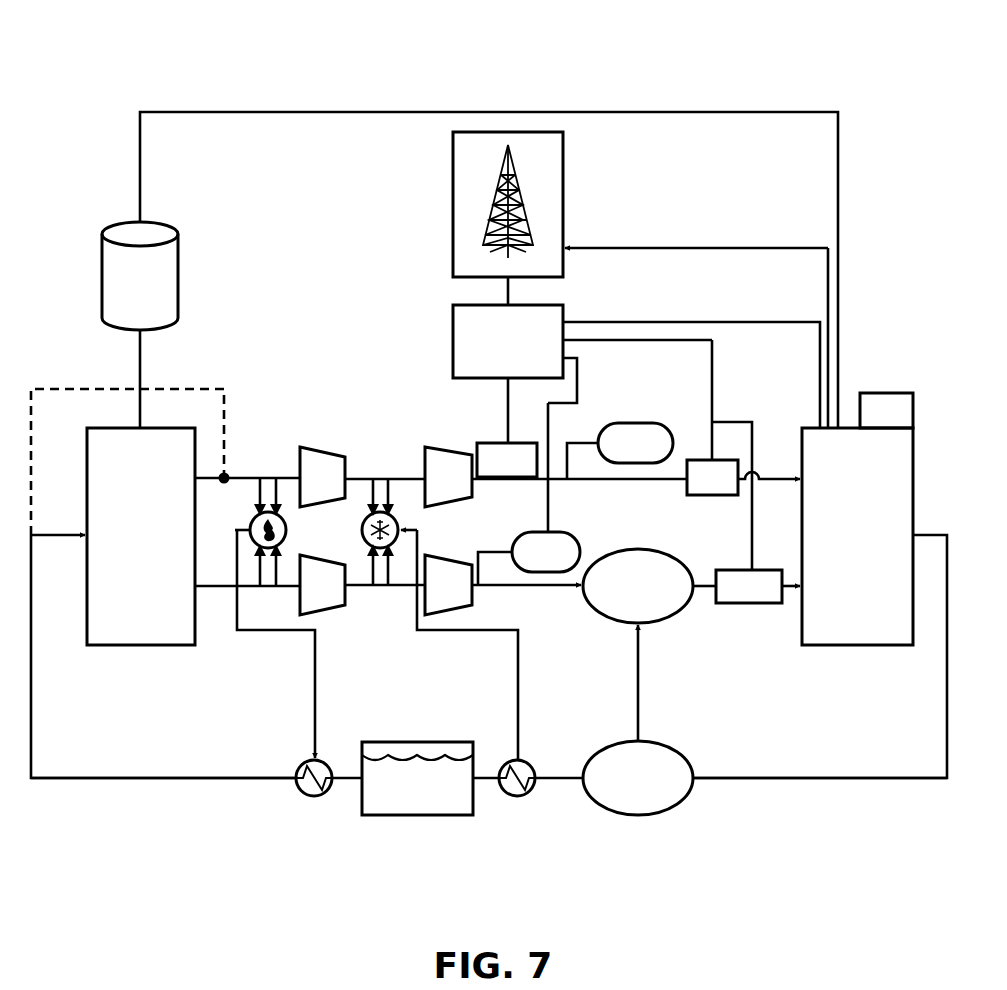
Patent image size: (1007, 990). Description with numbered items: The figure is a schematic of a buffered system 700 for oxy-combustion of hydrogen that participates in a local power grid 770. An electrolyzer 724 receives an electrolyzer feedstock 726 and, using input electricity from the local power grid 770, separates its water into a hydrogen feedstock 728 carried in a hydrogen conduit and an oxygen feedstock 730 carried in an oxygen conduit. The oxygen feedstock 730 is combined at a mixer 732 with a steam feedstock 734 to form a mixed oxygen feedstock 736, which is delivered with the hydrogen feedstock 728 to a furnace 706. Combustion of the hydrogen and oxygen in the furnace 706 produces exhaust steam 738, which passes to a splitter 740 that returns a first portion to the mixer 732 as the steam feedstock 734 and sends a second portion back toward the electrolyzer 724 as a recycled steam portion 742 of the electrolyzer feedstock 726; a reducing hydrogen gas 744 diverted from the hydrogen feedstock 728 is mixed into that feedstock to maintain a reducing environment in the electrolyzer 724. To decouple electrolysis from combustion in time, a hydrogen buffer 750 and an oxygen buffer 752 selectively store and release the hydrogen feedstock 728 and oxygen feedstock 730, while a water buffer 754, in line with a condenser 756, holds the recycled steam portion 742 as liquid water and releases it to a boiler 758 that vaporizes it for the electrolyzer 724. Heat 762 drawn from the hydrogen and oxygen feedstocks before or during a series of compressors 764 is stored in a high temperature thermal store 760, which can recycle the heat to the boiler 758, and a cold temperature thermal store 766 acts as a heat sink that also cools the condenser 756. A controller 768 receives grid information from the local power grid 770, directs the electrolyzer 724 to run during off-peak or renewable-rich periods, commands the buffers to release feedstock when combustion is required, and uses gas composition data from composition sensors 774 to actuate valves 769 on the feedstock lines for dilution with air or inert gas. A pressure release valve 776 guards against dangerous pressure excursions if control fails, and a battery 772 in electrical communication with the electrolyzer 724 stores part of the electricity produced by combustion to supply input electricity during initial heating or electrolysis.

The system 700 is at (850, 64).
The furnace 706 is at (857, 536).
The electrolyzer 724 is at (141, 536).
The electrolyzer feedstock 726 is at (53, 540).
The hydrogen feedstock 728 is at (203, 482).
The oxygen feedstock 730 is at (215, 592).
The mixer 732 is at (638, 586).
The steam feedstock 734 is at (640, 690).
The mixed oxygen feedstock 736 is at (704, 584).
The exhaust steam 738 is at (733, 780).
The splitter 740 is at (638, 778).
The recycled steam portion 742 is at (88, 780).
The reducing hydrogen gas 744 is at (62, 388).
The hydrogen buffer 750 is at (620, 451).
The oxygen buffer 752 is at (529, 494).
The water buffer 754 is at (417, 778).
The condenser 756 is at (519, 797).
The boiler 758 is at (317, 797).
The high temperature thermal store 760 is at (286, 531).
The heat 762 is at (264, 478).
The series of compressors 764 is at (322, 531).
The cold temperature thermal store 766 is at (392, 510).
The controller 768 is at (636, 352).
The valves 769 is at (507, 427).
The local power grid 770 is at (522, 210).
The battery 772 is at (140, 276).
The composition sensors 774 is at (758, 586).
The pressure release valve 776 is at (886, 410).